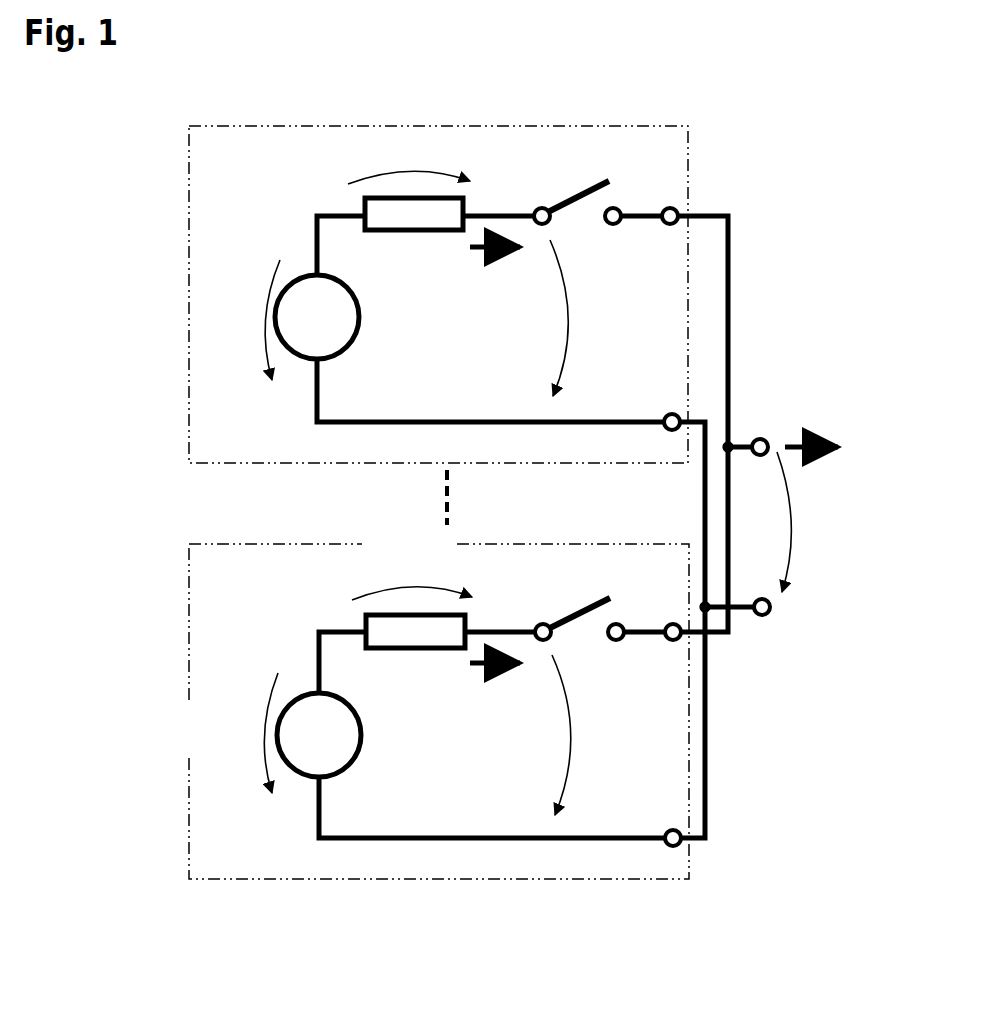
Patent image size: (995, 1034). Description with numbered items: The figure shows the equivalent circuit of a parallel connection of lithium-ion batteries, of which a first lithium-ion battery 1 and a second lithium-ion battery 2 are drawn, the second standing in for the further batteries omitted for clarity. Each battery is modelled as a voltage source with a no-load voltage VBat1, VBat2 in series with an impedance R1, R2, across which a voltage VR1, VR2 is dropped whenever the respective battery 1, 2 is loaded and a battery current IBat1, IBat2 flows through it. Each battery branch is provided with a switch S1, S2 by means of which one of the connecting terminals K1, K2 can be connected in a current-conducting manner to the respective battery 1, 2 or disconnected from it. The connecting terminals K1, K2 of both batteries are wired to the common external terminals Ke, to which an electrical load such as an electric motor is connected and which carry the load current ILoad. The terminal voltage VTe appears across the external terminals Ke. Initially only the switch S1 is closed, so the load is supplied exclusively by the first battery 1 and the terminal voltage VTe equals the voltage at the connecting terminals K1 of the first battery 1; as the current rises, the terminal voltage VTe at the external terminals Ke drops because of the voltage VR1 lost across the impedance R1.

The first lithium-ion battery 1 is at (438, 294).
The second lithium-ion battery 2 is at (439, 711).
The impedance of the first battery R1 is at (417, 232).
The impedance of the second battery R2 is at (418, 648).
The switch of the first battery S1 is at (627, 172).
The switch of the second battery S2 is at (612, 604).
The connecting terminals of the first battery K1 is at (683, 415).
The connecting terminals of the second battery K2 is at (687, 640).
The external terminals Ke is at (815, 587).
The no-load voltage of the first battery VBat1 is at (281, 320).
The no-load voltage of the second battery VBat2 is at (265, 733).
The voltage across the first impedance VR1 is at (409, 157).
The voltage across the second impedance VR2 is at (412, 567).
The current of the first battery IBat1 is at (517, 318).
The current of the second battery IBat2 is at (518, 735).
The load current ILoad is at (819, 468).
The terminal voltage VTe is at (808, 522).